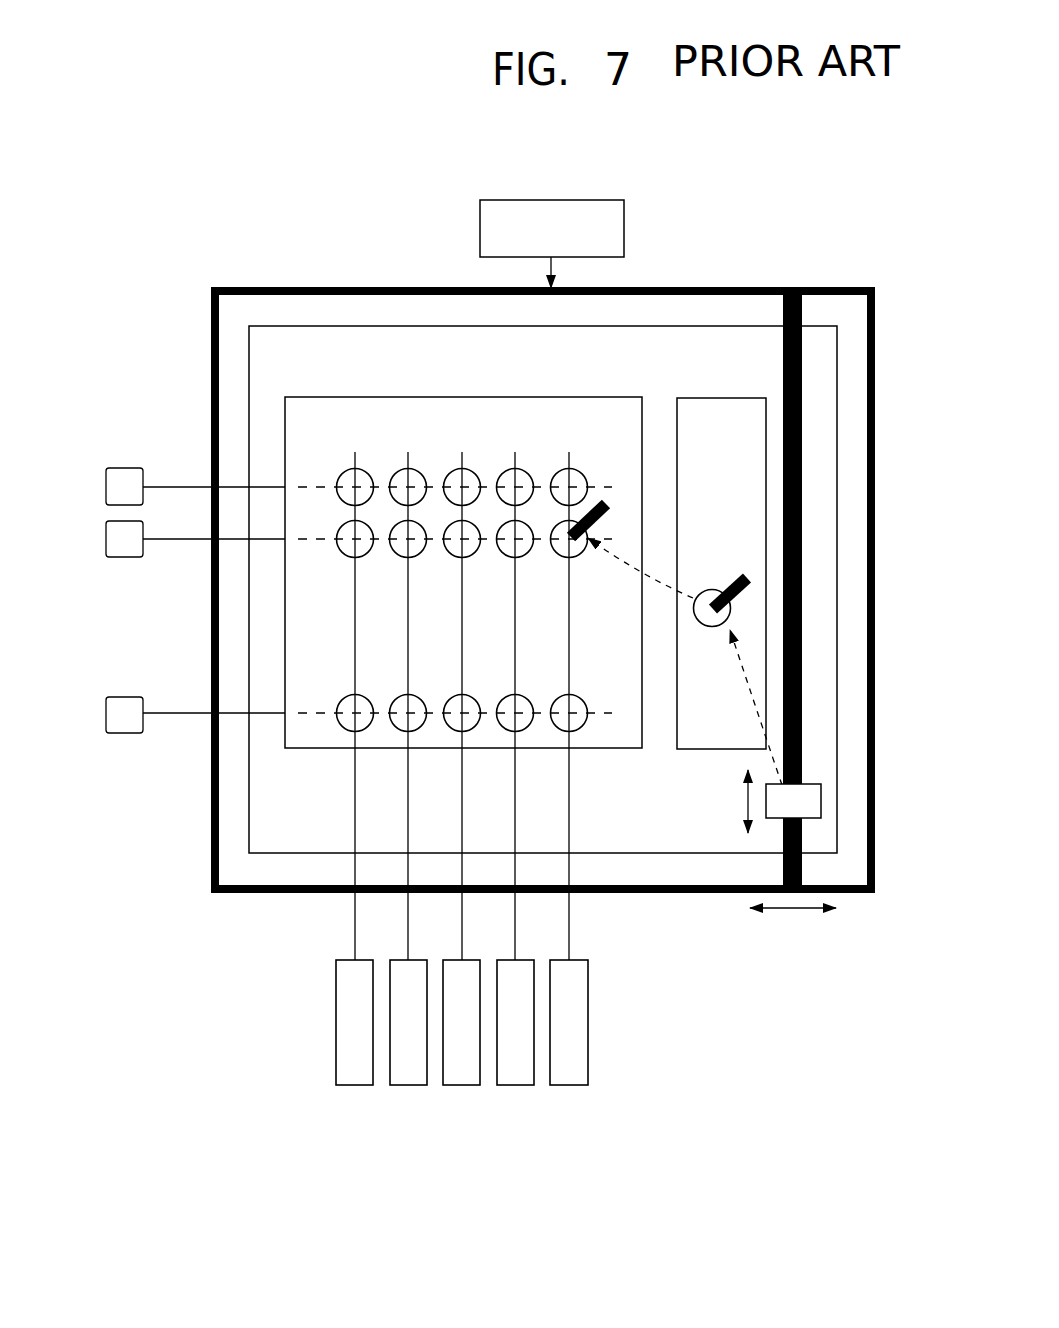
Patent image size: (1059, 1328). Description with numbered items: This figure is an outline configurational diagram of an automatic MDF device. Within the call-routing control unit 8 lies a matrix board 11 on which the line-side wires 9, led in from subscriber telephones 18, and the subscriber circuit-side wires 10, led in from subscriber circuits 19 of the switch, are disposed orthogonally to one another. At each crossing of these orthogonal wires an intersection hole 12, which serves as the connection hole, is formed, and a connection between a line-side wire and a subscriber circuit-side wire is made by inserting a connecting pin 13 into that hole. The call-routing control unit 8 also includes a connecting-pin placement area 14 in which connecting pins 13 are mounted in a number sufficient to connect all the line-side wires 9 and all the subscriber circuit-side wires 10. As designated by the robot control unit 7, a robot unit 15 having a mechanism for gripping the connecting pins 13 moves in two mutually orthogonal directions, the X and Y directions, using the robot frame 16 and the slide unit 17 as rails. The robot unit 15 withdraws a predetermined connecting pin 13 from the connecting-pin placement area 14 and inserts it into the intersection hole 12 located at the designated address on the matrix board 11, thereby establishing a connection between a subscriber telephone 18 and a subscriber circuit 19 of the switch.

The robot control unit 7 is at (599, 222).
The call-routing control unit 8 is at (488, 531).
The line-side wires 9 is at (377, 534).
The subscriber circuit-side wires 10 is at (509, 706).
The matrix board 11 is at (387, 532).
The intersection hole 12 is at (480, 544).
The connecting pin 13 is at (650, 447).
The connecting-pin placement area 14 is at (685, 591).
The robot unit 15 is at (724, 857).
The robot frame 16 is at (502, 503).
The slide unit 17 is at (722, 549).
The subscriber telephone 18 is at (91, 570).
The subscriber circuit 19 is at (534, 1065).